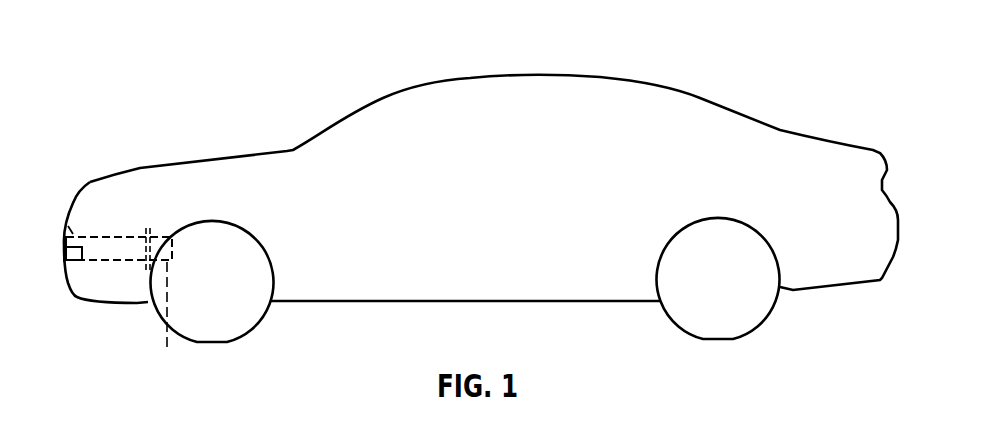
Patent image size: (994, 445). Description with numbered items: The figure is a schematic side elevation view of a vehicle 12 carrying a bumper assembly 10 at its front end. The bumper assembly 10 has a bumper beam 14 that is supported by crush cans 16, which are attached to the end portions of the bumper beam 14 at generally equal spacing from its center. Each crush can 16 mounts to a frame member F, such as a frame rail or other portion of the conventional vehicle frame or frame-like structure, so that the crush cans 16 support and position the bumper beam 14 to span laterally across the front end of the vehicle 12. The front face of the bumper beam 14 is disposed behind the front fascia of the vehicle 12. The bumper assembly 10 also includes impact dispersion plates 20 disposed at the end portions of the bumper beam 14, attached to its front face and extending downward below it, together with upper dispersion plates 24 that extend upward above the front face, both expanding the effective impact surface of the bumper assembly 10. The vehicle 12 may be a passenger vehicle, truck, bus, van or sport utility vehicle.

The bumper assembly 10 is at (120, 205).
The vehicle 12 is at (245, 72).
The bumper beam 14 is at (67, 249).
The crush cans 16 is at (105, 248).
The impact dispersion plates 20 is at (63, 267).
The upper dispersion plates 24 is at (70, 230).
The frame member F is at (172, 320).